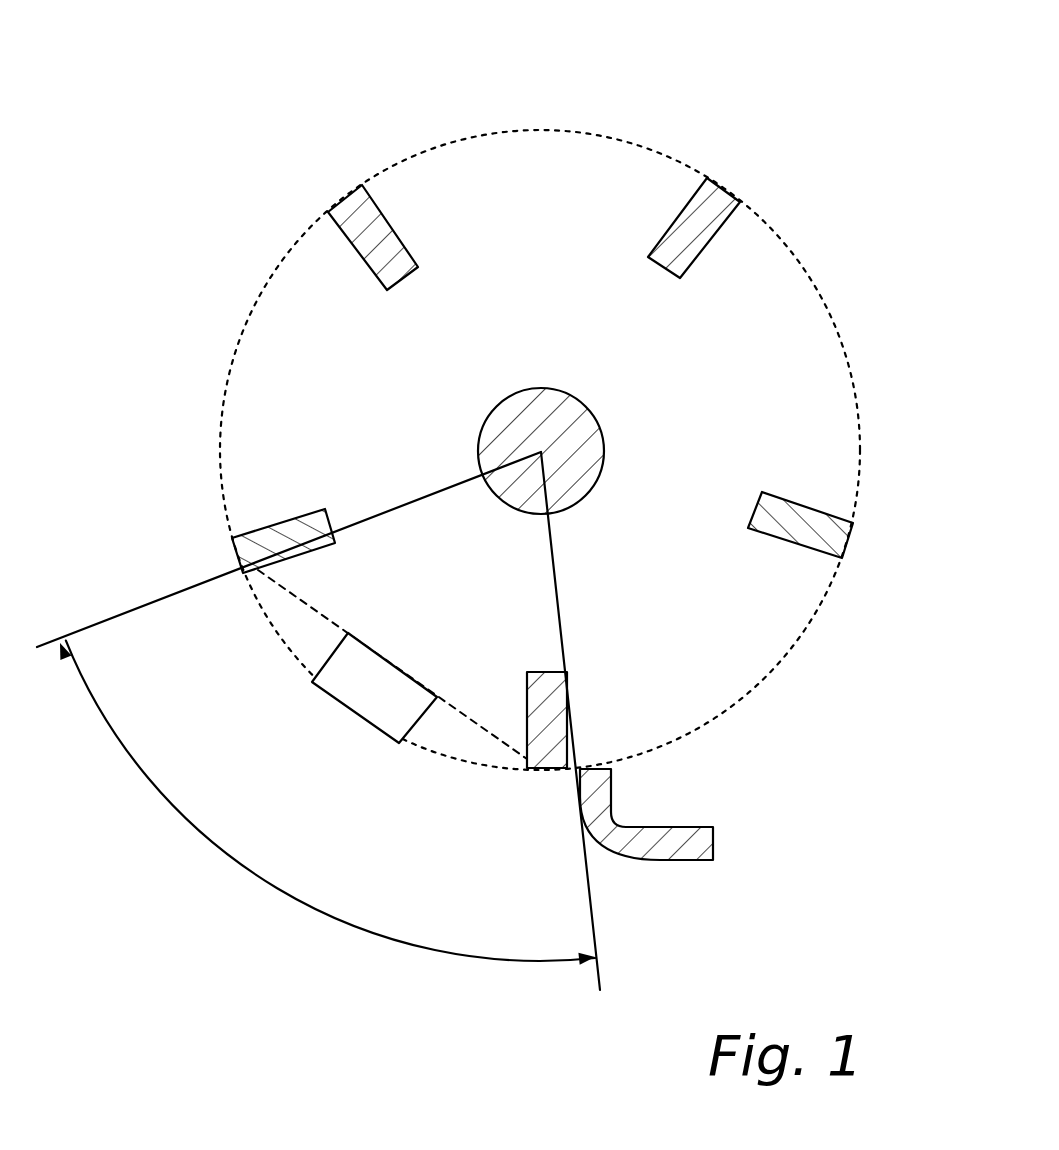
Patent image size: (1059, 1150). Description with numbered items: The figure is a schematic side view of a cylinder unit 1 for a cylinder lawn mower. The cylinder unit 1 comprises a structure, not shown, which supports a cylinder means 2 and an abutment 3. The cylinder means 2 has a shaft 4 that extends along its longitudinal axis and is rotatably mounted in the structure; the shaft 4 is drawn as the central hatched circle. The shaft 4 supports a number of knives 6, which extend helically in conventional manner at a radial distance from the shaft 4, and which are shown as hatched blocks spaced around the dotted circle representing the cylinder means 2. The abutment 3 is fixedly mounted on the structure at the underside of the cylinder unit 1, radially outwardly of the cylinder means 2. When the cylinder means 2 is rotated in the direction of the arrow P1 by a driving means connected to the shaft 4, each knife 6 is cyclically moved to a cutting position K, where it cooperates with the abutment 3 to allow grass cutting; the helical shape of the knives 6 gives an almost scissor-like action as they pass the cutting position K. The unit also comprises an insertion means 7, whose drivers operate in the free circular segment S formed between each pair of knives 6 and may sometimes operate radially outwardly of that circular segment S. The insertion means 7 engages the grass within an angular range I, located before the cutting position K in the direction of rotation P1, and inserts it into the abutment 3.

The cylinder unit 1 is at (646, 96).
The cylinder means 2 is at (732, 340).
The abutment 3 is at (597, 834).
The shaft 4 is at (572, 436).
The knives 6 is at (357, 218).
The insertion means 7 is at (343, 678).
The cutting position K is at (598, 767).
The free circular segment S is at (458, 738).
The direction of rotation P1 is at (421, 362).
The angular range I is at (318, 721).